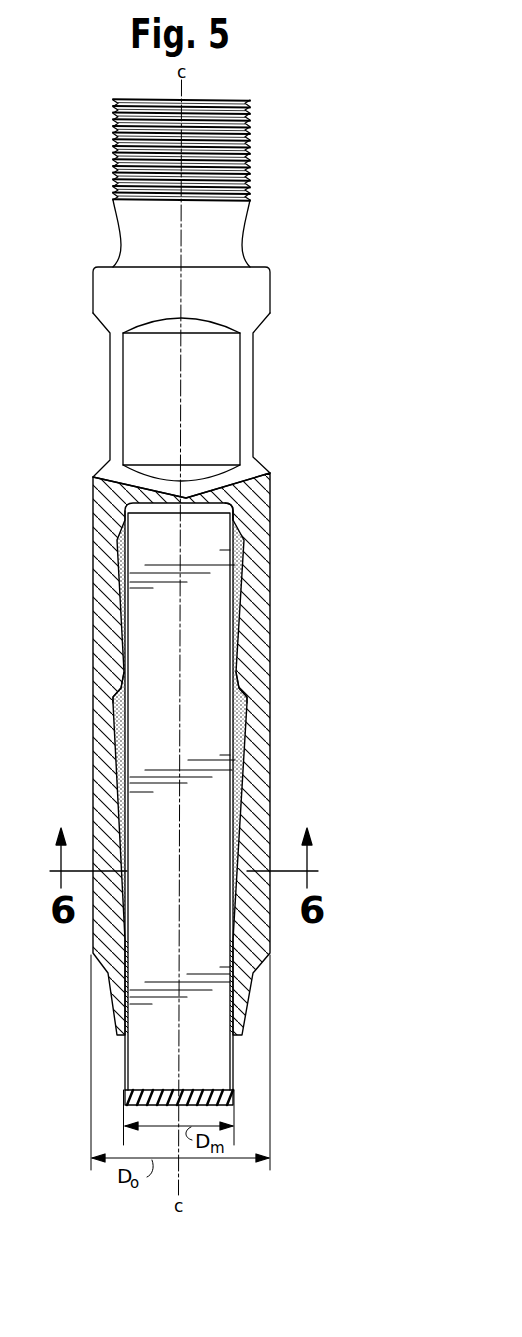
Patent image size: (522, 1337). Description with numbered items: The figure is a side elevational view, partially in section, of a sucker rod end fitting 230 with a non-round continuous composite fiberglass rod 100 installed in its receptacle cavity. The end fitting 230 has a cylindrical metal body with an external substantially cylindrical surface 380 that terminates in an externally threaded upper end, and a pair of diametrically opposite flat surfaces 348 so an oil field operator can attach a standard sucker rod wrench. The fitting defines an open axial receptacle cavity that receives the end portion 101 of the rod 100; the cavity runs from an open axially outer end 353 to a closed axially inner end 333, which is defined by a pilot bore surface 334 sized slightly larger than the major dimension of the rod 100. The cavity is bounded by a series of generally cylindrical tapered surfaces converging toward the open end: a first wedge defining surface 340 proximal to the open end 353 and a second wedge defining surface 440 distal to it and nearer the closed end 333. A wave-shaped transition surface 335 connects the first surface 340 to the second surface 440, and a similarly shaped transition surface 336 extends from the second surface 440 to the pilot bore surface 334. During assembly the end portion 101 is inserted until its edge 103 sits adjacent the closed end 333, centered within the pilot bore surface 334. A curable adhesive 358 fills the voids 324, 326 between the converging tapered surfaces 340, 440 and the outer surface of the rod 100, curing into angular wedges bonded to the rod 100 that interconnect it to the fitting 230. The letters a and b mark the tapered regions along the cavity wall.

The composite fiberglass rod 100 is at (220, 652).
The end portion 101 is at (209, 837).
The edge 103 is at (247, 498).
The end fitting 230 is at (257, 413).
The void 324 is at (117, 727).
The void 326 is at (110, 580).
The closed axially inner end 333 is at (188, 492).
The pilot bore surface 334 is at (222, 506).
The transition surface 335 is at (240, 681).
The transition surface 336 is at (243, 532).
The first generally cylindrical wedge defining surface 340 is at (247, 782).
The flat surfaces 348 is at (147, 412).
The open axially outer end 353 is at (117, 1034).
The curable adhesive 358 is at (243, 573).
The external substantially cylindrical surface 380 is at (92, 620).
The second cylindrical wedge defining surface 440 is at (240, 618).
The lower taper angle a is at (120, 677).
The upper taper angle b is at (93, 488).